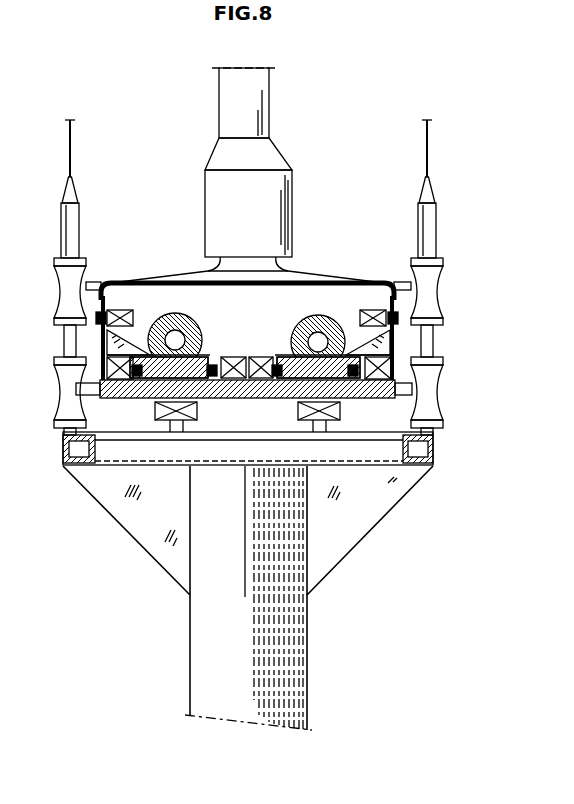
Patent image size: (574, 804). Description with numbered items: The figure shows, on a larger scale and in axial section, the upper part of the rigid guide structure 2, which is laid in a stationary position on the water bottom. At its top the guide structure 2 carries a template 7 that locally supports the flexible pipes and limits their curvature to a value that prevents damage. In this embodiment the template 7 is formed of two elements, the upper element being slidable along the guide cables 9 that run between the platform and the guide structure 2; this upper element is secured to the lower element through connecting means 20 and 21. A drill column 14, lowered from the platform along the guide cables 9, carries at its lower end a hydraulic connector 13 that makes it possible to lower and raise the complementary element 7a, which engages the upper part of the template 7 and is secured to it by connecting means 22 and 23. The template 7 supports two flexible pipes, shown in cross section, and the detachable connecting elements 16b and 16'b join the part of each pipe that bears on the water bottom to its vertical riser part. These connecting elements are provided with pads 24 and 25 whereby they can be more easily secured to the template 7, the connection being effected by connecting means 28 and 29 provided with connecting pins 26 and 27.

The guide structure 2 is at (198, 640).
The template 7 is at (75, 482).
The complementary element 7a is at (188, 282).
The guide cables 9 is at (70, 149).
The hydraulic connector 13 is at (300, 186).
The drill column 14 is at (270, 92).
The detachable connecting element 16b is at (188, 335).
The detachable connecting element 16'b is at (301, 334).
The connecting means 20 is at (182, 422).
The connecting means 21 is at (332, 422).
The connecting means 22 is at (132, 318).
The connecting means 23 is at (364, 318).
The pad 24 is at (202, 375).
The pad 25 is at (300, 378).
The connecting pin 26 is at (136, 372).
The connecting pin 27 is at (355, 373).
The connecting means 28 is at (118, 372).
The connecting means 29 is at (382, 372).